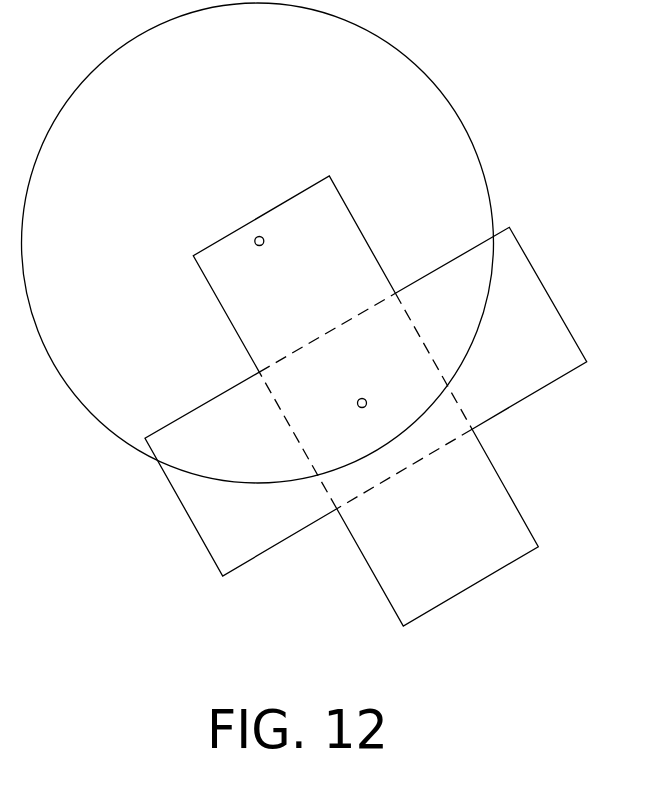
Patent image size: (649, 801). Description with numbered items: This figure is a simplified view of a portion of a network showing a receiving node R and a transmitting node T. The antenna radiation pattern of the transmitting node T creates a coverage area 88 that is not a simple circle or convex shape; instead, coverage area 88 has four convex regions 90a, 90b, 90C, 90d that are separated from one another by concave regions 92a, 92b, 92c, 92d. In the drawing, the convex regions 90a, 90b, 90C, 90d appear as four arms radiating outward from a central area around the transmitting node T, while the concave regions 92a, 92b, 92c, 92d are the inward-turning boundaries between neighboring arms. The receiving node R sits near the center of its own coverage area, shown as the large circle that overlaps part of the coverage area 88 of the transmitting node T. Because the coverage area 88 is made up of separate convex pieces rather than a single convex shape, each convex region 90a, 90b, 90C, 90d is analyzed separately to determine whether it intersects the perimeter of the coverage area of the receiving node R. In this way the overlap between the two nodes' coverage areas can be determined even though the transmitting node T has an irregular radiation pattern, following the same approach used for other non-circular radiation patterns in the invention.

The coverage area 88 is at (580, 521).
The convex region 90a is at (293, 191).
The convex region 90b is at (545, 288).
The convex region 90C is at (457, 598).
The convex region 90d is at (192, 530).
The concave region 92a is at (394, 290).
The concave region 92b is at (492, 420).
The concave region 92c is at (345, 530).
The concave region 92d is at (250, 352).
The receiving node R is at (258, 236).
The transmitting node T is at (357, 403).